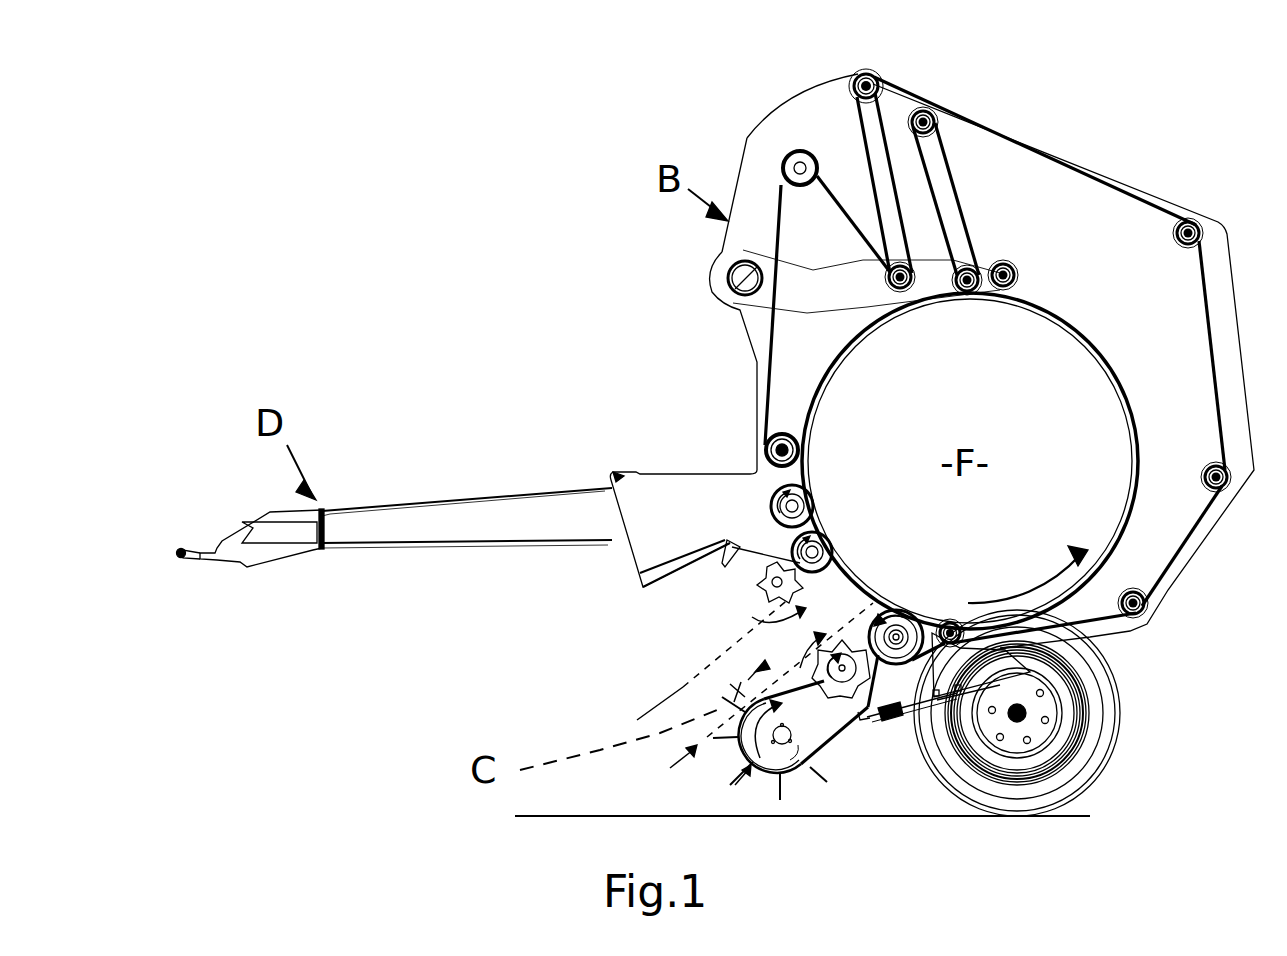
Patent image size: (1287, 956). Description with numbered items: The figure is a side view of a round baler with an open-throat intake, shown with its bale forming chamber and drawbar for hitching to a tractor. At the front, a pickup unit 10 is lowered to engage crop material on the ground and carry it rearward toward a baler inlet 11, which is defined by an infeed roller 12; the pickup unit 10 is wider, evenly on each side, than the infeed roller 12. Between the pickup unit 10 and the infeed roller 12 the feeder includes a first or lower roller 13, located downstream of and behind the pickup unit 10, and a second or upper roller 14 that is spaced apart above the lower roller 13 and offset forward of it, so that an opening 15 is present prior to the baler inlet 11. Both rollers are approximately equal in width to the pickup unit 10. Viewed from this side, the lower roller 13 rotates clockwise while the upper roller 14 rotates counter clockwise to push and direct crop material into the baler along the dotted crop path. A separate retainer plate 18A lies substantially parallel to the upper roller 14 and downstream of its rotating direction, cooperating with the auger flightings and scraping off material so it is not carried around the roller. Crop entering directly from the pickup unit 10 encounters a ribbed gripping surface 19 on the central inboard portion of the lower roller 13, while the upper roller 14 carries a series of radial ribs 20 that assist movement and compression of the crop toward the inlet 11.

The pickup unit 10 is at (764, 772).
The baler inlet 11 is at (796, 646).
The infeed roller 12 is at (900, 633).
The lower roller 13 is at (843, 672).
The upper roller 14 is at (760, 583).
The opening 15 is at (647, 710).
The retainer plate 18A is at (790, 560).
The ribs 19 is at (872, 657).
The radial ribs 20 is at (757, 585).